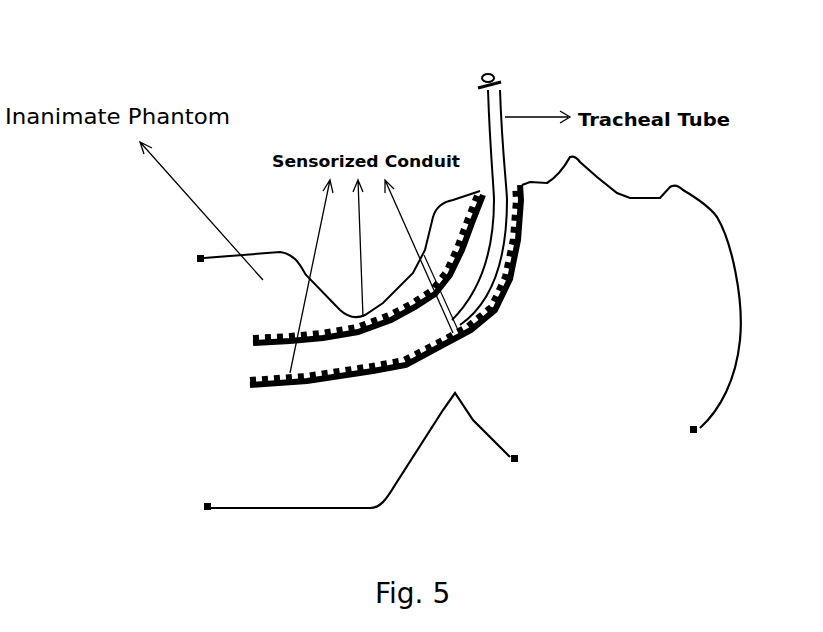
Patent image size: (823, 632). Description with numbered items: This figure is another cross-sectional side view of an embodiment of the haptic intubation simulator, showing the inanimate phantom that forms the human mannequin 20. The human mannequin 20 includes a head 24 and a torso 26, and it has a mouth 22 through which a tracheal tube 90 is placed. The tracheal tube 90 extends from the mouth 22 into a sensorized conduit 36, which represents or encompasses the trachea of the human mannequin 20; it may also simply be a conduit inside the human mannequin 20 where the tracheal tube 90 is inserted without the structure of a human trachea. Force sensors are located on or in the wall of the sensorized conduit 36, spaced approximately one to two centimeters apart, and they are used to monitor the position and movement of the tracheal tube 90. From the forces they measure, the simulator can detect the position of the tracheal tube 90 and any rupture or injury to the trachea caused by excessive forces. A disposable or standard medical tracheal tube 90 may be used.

The human mannequin 20 is at (717, 215).
The mouth 22 is at (481, 190).
The head 24 is at (730, 387).
The torso 26 is at (324, 510).
The sensorized conduit 36 is at (419, 366).
The tracheal tube 90 is at (498, 97).